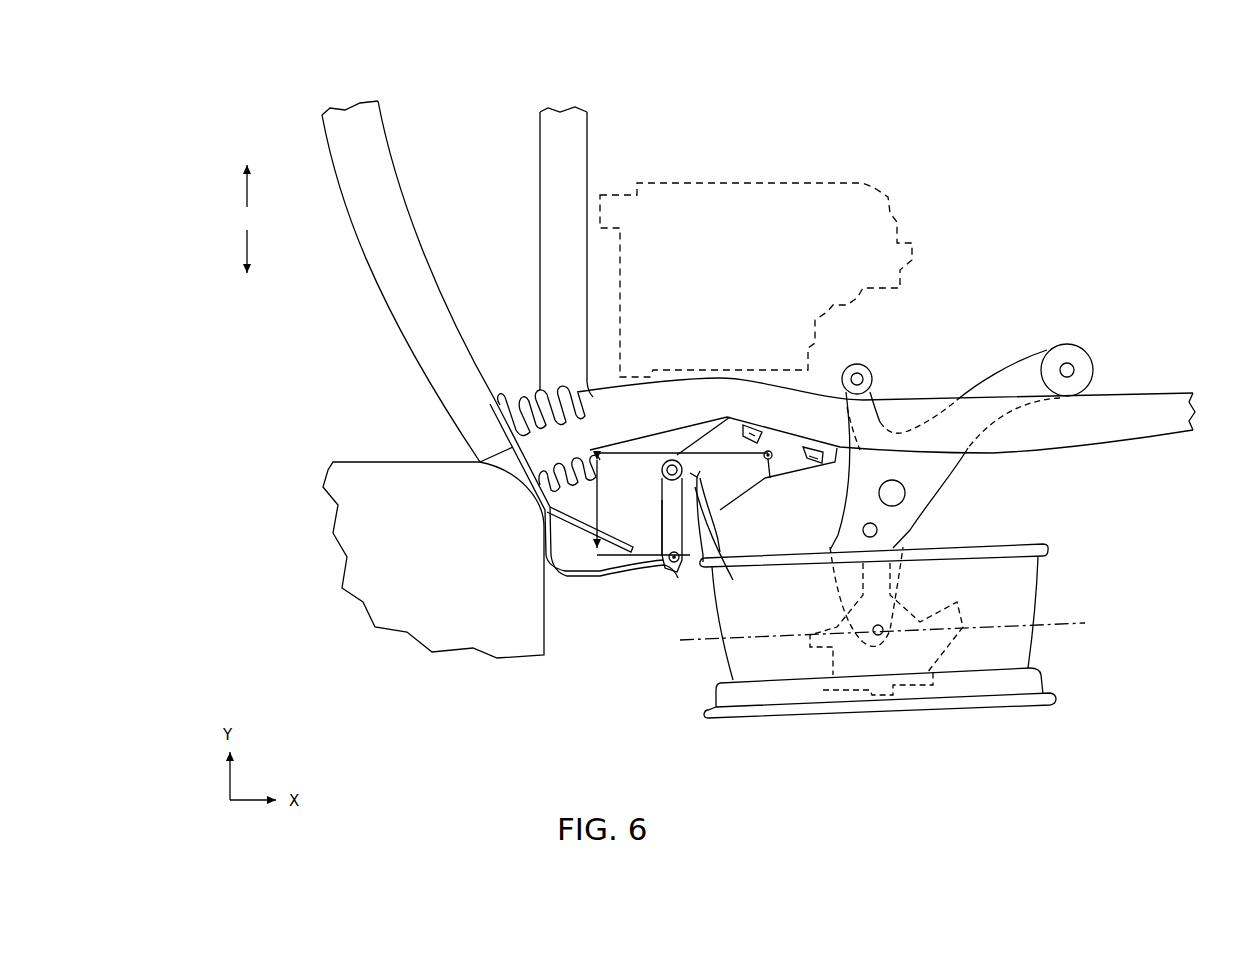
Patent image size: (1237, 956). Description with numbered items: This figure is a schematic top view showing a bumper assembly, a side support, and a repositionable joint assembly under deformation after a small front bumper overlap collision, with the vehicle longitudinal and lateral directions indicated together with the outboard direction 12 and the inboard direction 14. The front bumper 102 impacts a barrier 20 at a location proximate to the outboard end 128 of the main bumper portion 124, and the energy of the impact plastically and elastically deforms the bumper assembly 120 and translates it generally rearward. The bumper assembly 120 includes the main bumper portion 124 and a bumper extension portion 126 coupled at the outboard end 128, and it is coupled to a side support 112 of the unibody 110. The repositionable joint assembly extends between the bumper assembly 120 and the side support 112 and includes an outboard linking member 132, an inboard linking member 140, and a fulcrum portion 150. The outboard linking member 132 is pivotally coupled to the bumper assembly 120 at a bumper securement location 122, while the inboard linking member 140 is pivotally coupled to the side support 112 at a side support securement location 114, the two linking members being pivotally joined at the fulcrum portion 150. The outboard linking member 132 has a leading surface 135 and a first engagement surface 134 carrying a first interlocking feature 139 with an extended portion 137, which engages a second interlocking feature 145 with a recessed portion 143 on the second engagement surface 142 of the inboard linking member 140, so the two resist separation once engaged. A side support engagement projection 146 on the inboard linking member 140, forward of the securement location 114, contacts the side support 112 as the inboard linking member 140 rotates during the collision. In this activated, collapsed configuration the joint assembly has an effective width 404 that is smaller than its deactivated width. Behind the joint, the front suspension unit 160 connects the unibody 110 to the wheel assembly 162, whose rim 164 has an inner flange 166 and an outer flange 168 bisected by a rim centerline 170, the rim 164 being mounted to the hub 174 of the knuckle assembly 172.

The front bumper 102 is at (282, 139).
The inboard direction 14 is at (247, 188).
The outboard direction 12 is at (247, 250).
The barrier 20 is at (352, 462).
The unibody 110 is at (1150, 196).
The side support 112 is at (1137, 366).
The side support securement location 114 is at (771, 452).
The bumper assembly 120 is at (432, 163).
The bumper securement location 122 is at (672, 567).
The main bumper portion 124 is at (430, 255).
The bumper extension portion 126 is at (574, 577).
The outboard end 128 is at (447, 442).
The outboard linking member 132 is at (700, 576).
The first engagement surface 134 is at (717, 530).
The leading surface 135 is at (662, 490).
The extended portion 137 is at (693, 495).
The first interlocking feature 139 is at (728, 543).
The inboard linking member 140 is at (768, 489).
The second engagement surface 142 is at (713, 514).
The recessed portion 143 is at (700, 497).
The second interlocking feature 145 is at (693, 462).
The side support engagement projection 146 is at (730, 416).
The fulcrum portion 150 is at (652, 456).
The front suspension unit 160 is at (912, 762).
The wheel assembly 162 is at (950, 740).
The rim 164 is at (1000, 725).
The inner flange 166 is at (1043, 543).
The outer flange 168 is at (1045, 708).
The rim centerline 170 is at (1078, 623).
The knuckle assembly 172 is at (1079, 336).
The hub 174 is at (965, 604).
The effective width 404 is at (675, 504).